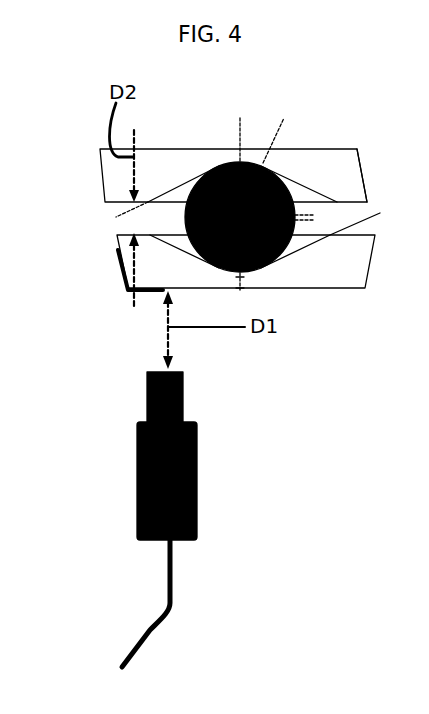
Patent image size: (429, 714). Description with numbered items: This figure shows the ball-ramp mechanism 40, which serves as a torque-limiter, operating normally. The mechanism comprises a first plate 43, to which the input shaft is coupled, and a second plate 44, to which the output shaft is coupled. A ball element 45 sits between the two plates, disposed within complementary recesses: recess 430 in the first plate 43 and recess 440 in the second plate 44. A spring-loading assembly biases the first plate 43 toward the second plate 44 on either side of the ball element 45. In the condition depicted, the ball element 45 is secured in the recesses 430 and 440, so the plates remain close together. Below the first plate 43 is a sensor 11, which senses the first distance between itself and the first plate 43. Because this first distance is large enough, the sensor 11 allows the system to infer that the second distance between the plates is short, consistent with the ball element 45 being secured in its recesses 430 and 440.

The ball-ramp mechanism 40 is at (358, 181).
The second plate 44 is at (197, 160).
The recess 440 is at (311, 190).
The ball element 45 is at (186, 214).
The first plate 43 is at (333, 322).
The recess 430 is at (172, 250).
The sensor 11 is at (197, 457).